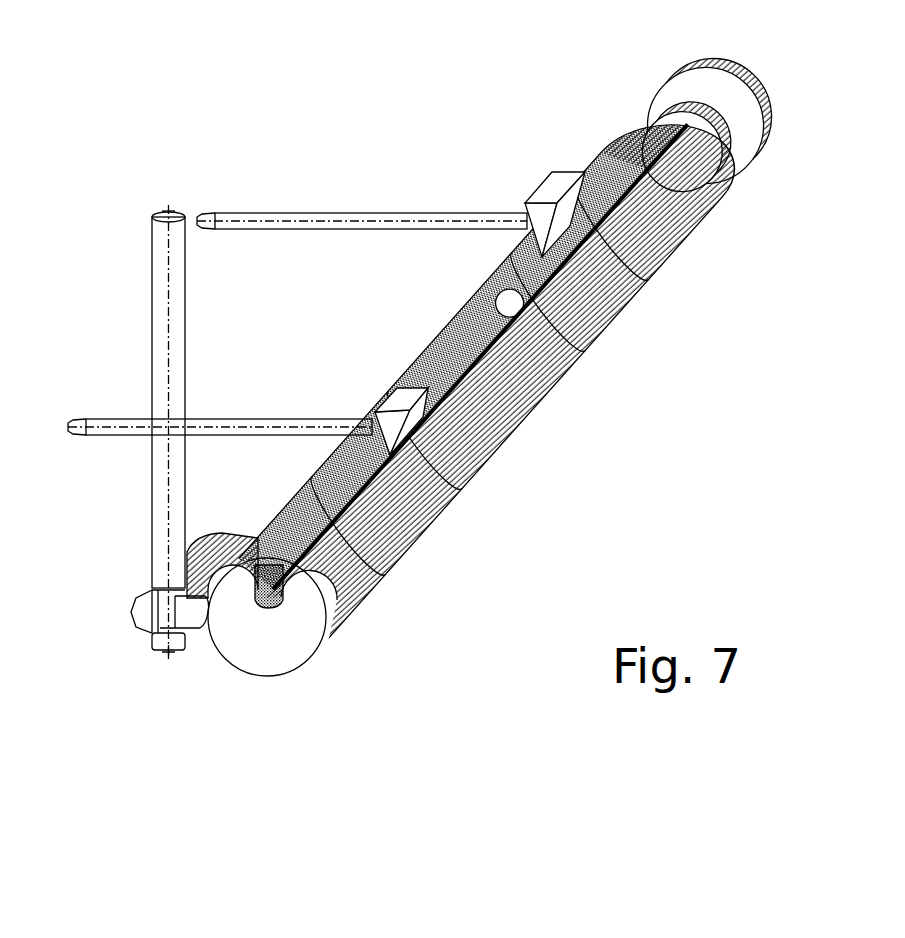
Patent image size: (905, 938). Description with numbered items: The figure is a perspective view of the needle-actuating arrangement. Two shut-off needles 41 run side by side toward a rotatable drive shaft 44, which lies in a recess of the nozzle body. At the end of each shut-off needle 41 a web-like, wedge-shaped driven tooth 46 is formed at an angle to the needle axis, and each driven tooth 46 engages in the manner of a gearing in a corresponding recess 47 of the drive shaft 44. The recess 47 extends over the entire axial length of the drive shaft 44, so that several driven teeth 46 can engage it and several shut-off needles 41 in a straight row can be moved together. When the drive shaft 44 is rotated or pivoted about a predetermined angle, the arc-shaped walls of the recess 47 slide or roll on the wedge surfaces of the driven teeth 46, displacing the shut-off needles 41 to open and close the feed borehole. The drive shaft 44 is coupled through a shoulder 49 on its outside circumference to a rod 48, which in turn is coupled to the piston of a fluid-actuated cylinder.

The shut-off needle 41 is at (226, 427).
The drive shaft 44 is at (607, 330).
The driven tooth 46 is at (398, 405).
The recess 47 is at (273, 607).
The rod 48 is at (167, 307).
The shoulder 49 is at (189, 612).